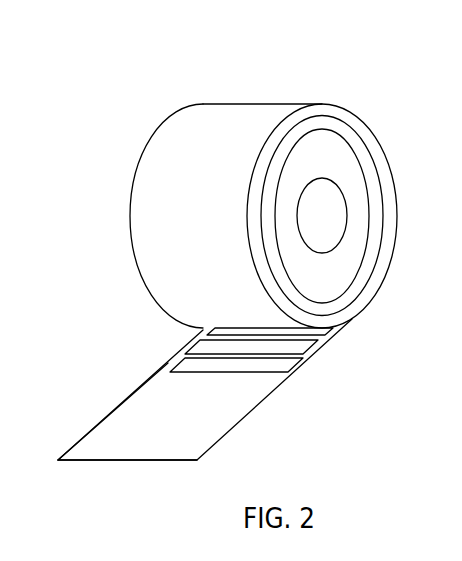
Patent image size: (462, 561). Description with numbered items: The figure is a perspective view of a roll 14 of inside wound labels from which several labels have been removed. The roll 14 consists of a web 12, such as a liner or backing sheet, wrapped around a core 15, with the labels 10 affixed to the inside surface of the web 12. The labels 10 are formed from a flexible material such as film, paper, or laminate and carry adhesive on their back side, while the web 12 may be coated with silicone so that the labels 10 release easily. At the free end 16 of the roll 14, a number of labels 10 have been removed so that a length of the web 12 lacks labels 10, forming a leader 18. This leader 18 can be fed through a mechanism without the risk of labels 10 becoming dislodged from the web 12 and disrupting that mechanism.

The roll 14 is at (348, 83).
The core 15 is at (358, 229).
The web 12 is at (172, 364).
The free end 16 is at (140, 461).
The leader 18 is at (150, 363).
The labels 10 is at (293, 362).